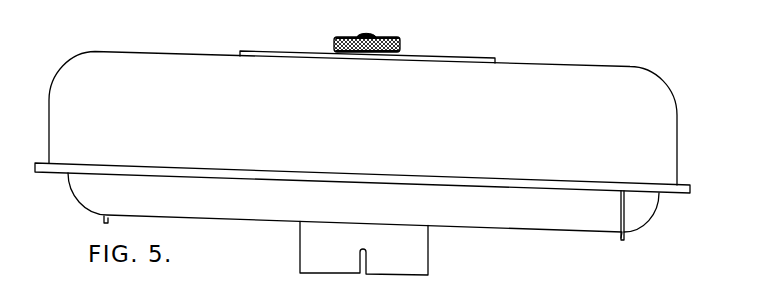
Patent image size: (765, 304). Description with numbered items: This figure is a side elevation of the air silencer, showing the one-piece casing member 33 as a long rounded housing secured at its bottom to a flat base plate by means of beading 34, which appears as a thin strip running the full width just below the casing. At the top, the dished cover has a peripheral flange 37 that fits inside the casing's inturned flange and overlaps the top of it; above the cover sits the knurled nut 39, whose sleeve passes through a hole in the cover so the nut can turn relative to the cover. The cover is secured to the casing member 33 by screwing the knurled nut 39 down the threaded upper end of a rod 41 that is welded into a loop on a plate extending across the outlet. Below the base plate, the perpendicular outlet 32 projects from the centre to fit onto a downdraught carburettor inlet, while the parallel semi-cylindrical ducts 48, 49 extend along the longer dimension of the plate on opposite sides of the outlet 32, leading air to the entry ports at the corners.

The outlet 32 is at (318, 247).
The casing member 33 is at (512, 83).
The beading 34 is at (684, 191).
The peripheral flange 37 is at (427, 54).
The knurled nut 39 is at (338, 38).
The rod 41 is at (371, 34).
The semi-cylindrical duct 48 is at (633, 215).
The semi-cylindrical duct 49 is at (491, 216).